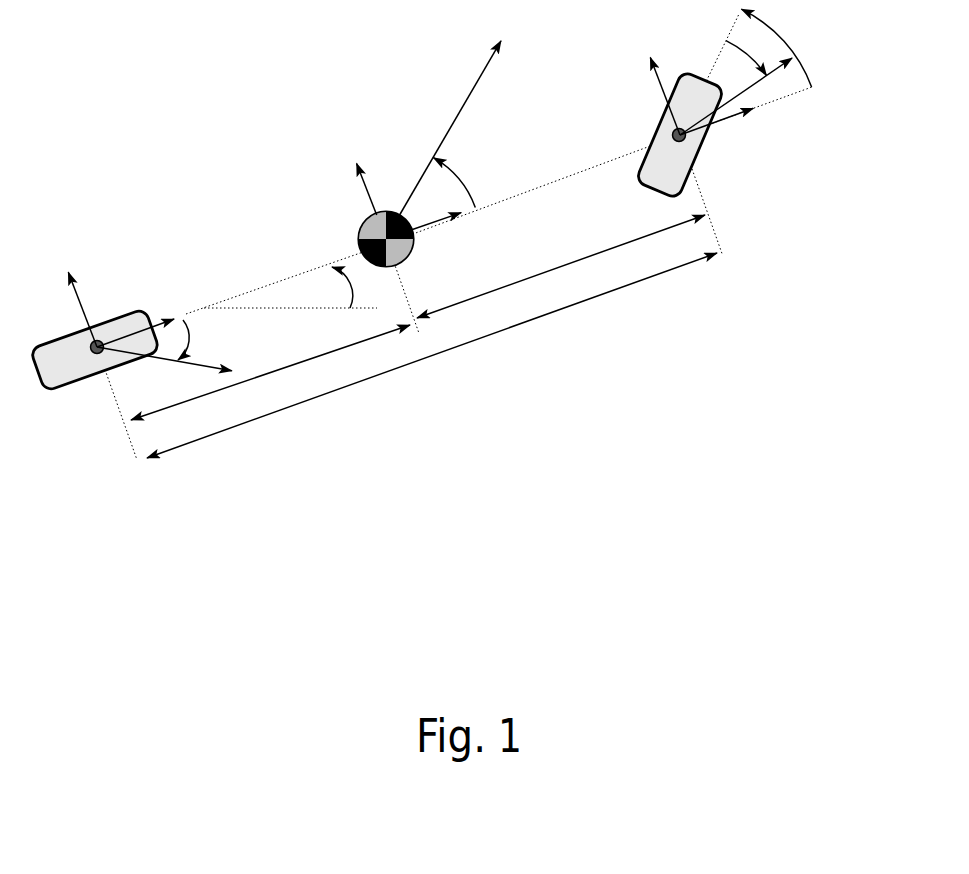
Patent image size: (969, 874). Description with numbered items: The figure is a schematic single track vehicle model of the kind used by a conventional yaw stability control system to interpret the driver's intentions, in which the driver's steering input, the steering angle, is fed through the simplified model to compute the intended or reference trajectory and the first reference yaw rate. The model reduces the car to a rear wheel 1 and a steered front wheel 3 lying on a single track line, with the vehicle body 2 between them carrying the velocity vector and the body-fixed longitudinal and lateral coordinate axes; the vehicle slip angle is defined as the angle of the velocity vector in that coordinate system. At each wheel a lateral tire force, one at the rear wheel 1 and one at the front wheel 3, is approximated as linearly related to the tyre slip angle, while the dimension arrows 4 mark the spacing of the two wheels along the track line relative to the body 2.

The rear wheel 1 is at (130, 327).
The center of gravity 2 is at (416, 174).
The front wheel 3 is at (711, 101).
The wheelbase dimensions 4 is at (424, 336).